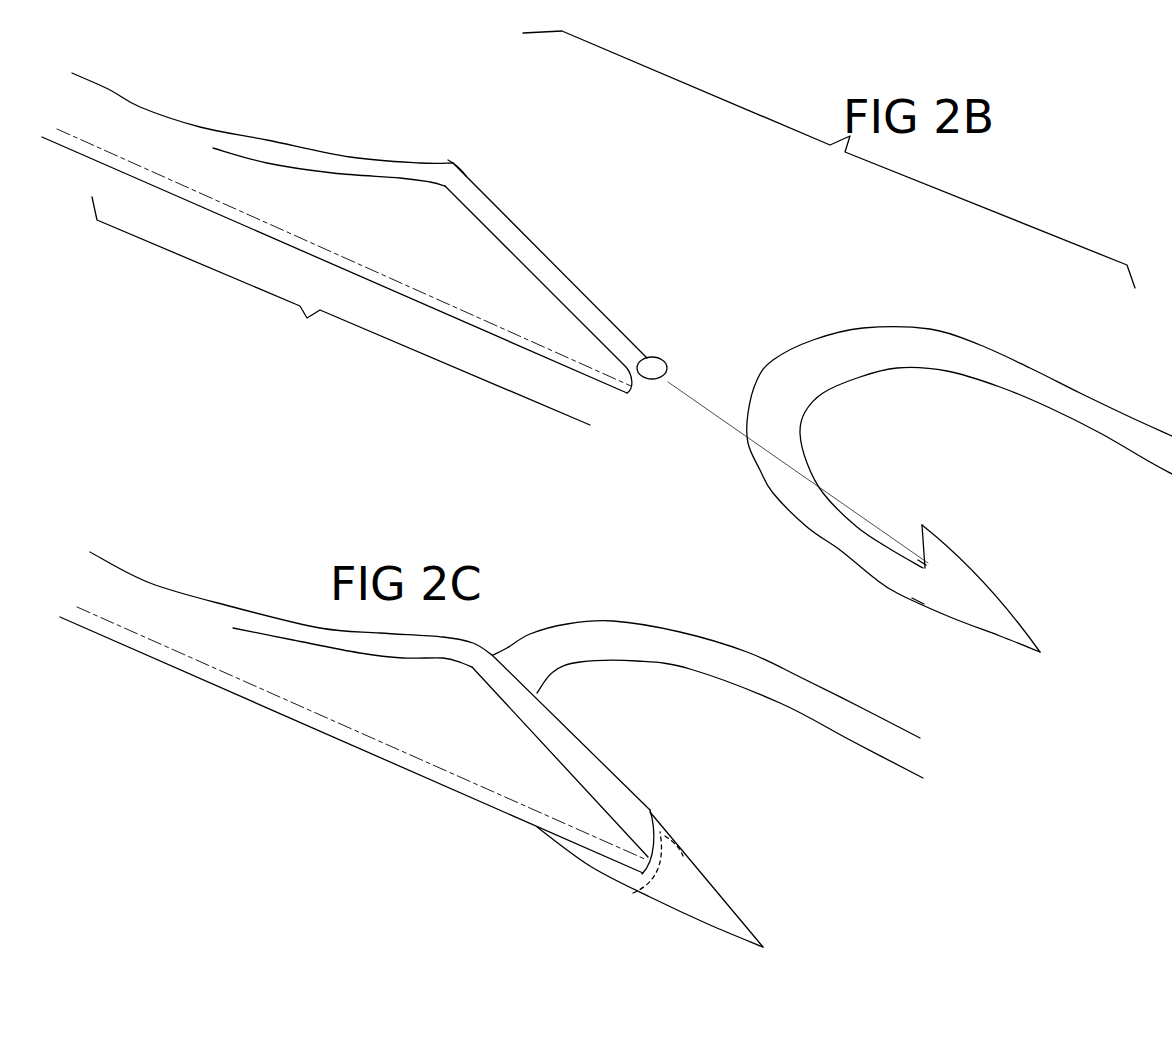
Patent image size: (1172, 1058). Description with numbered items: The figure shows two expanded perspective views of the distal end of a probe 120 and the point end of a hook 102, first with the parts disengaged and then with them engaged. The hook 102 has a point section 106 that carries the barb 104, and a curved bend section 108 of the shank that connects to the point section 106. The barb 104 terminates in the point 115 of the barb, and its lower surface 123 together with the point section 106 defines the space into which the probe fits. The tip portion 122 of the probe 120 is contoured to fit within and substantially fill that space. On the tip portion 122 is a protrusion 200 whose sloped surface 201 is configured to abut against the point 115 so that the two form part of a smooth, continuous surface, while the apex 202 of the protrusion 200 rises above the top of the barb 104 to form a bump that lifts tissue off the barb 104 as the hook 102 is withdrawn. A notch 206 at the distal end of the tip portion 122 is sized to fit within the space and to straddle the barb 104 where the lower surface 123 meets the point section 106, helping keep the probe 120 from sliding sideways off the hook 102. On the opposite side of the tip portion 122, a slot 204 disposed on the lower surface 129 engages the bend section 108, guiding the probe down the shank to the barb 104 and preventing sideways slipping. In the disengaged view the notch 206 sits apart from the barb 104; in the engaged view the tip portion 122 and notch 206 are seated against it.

In FIG. 2B, the hook 102 is at (959, 464).
In FIG. 2C, the hook 102 is at (708, 765).
In FIG. 2B, the barb 104 is at (956, 564).
In FIG. 2C, the barb 104 is at (650, 855).
In FIG. 2B, the point section 106 is at (920, 571).
In FIG. 2B, the bend section 108 is at (818, 334).
In FIG. 2C, the bend section 108 is at (498, 656).
In FIG. 2B, the point of the barb 115 is at (922, 527).
In FIG. 2C, the point of the barb 115 is at (651, 812).
In FIG. 2B, the probe 120 is at (116, 76).
In FIG. 2C, the probe 120 is at (134, 560).
In FIG. 2B, the tip portion 122 is at (341, 311).
In FIG. 2B, the lower surface of the barb 123 is at (921, 565).
In FIG. 2B, the lower surface of the tip portion 129 is at (336, 261).
In FIG. 2C, the lower surface of the tip portion 129 is at (353, 740).
In FIG. 2B, the protrusion 200 is at (555, 230).
In FIG. 2B, the sloped surface 201 is at (508, 227).
In FIG. 2B, the apex 202 is at (456, 162).
In FIG. 2B, the slot 204 is at (260, 220).
In FIG. 2C, the slot 204 is at (208, 666).
In FIG. 2B, the notch 206 is at (656, 362).
In FIG. 2C, the notch 206 is at (633, 893).